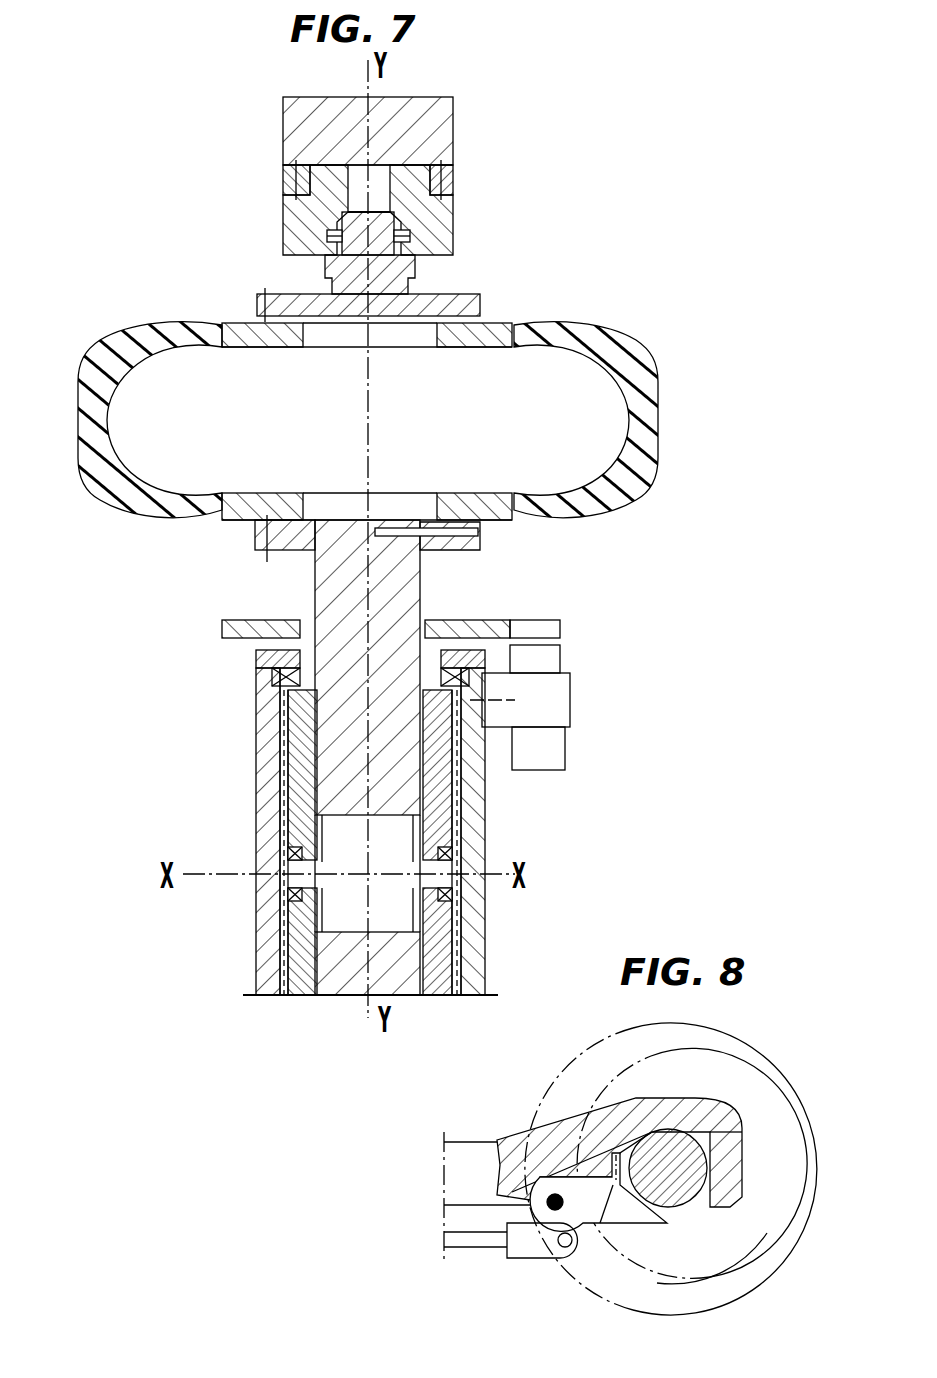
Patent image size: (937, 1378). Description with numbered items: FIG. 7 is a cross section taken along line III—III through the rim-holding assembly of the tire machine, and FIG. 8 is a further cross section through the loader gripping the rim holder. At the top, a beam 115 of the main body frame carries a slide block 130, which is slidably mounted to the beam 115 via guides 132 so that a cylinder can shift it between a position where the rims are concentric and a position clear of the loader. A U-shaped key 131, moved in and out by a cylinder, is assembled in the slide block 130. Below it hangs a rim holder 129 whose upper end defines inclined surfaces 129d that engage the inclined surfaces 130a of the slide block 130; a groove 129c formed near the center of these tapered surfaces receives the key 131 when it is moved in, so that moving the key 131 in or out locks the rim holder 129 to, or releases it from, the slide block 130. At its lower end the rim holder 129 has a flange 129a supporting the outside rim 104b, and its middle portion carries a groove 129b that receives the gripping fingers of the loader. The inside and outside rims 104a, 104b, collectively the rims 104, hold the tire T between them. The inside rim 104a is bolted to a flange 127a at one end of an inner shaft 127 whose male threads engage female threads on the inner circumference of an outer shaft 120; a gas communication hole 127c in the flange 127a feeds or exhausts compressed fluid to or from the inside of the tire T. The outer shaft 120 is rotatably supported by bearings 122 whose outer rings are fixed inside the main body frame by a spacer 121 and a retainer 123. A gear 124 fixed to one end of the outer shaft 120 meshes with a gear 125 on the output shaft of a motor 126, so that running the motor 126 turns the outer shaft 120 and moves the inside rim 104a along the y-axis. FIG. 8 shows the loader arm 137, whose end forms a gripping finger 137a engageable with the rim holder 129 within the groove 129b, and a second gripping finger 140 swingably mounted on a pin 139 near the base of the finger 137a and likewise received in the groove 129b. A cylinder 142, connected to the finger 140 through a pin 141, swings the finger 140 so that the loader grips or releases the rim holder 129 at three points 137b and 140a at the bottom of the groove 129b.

In FIG. 7, the beam 115 is at (455, 138).
In FIG. 7, the guides 132 is at (302, 176).
In FIG. 7, the U-shaped key 131 is at (402, 232).
In FIG. 7, the slide block 130 is at (305, 205).
In FIG. 7, the inclined surfaces 130a is at (388, 210).
In FIG. 7, the rim holder 129 is at (335, 292).
In FIG. 7, the flange 129a is at (262, 309).
In FIG. 8, the flange 129a is at (737, 1242).
In FIG. 7, the groove 129b is at (330, 272).
In FIG. 8, the groove 129b is at (700, 1178).
In FIG. 7, the groove 129c is at (335, 235).
In FIG. 7, the inclined surfaces 129d is at (385, 262).
In FIG. 7, the rim 104 is at (250, 352).
In FIG. 7, the inside rim 104a is at (475, 493).
In FIG. 7, the outside rim 104b is at (470, 348).
In FIG. 8, the outside rim 104b is at (740, 1293).
In FIG. 7, the tire T is at (80, 372).
In FIG. 7, the inner shaft 127 is at (325, 592).
In FIG. 7, the flange 127a is at (265, 538).
In FIG. 7, the gas communication hole 127c is at (482, 540).
In FIG. 7, the gear 124 is at (222, 628).
In FIG. 7, the gear 125 is at (560, 628).
In FIG. 7, the motor 126 is at (572, 712).
In FIG. 7, the spacer 121 is at (275, 766).
In FIG. 7, the retainer 123 is at (262, 664).
In FIG. 7, the bearings 122 is at (265, 683).
In FIG. 7, the outer shaft 120 is at (298, 822).
In FIG. 7, the section line III— III is at (256, 972).
In FIG. 8, the loader arm 137 is at (460, 1155).
In FIG. 8, the gripping finger 137a is at (607, 1128).
In FIG. 8, the gripping points 137b is at (715, 1128).
In FIG. 8, the gripping point 140a is at (655, 1152).
In FIG. 8, the second gripping finger 140 is at (530, 1212).
In FIG. 8, the pin 139 is at (545, 1200).
In FIG. 8, the cylinder 142 is at (478, 1242).
In FIG. 8, the pin 141 is at (558, 1248).